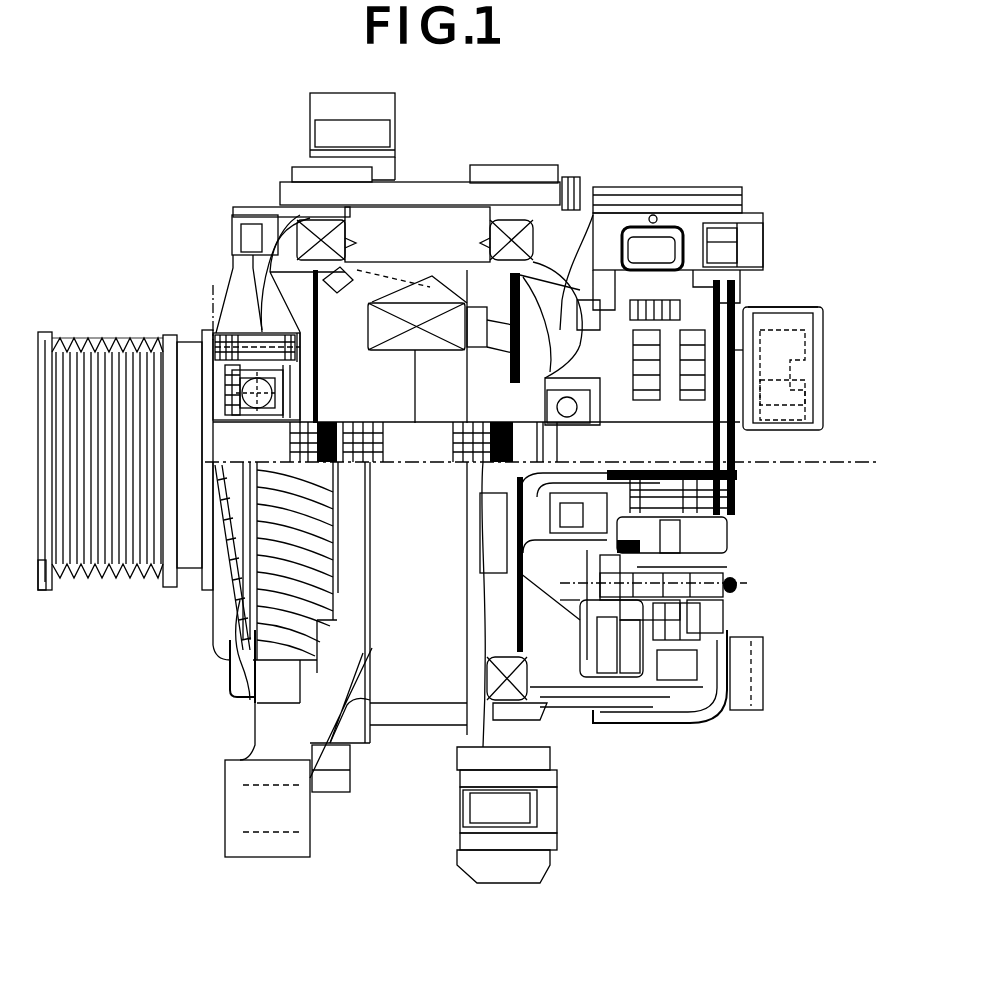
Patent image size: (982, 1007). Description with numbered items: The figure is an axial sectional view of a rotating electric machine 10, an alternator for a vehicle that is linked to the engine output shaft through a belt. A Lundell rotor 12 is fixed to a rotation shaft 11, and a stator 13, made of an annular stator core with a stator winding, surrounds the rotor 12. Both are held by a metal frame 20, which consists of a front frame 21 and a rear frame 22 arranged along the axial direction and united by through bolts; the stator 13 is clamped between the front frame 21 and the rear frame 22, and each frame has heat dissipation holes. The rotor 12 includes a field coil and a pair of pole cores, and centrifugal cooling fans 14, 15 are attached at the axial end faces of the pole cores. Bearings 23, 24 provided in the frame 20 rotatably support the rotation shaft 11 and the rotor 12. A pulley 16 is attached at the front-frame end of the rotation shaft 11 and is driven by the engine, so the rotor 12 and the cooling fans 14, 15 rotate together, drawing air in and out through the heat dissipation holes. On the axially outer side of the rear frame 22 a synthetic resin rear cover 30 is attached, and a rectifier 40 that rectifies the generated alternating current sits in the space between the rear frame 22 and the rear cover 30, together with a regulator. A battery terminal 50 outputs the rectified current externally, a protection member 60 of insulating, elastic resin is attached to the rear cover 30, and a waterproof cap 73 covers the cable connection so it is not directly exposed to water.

The rotating electric machine 10 is at (776, 171).
The rotation shaft 11 is at (218, 355).
The Lundell rotor 12 is at (437, 282).
The stator 13 is at (413, 207).
The centrifugal cooling fan 14 is at (280, 307).
The centrifugal cooling fan 15 is at (558, 300).
The pulley 16 is at (56, 336).
The frame 20 is at (373, 916).
The front frame 21 is at (292, 857).
The rear frame 22 is at (447, 852).
The bearing 23 is at (262, 345).
The bearing 24 is at (577, 297).
The rear cover 30 is at (720, 532).
The rectifier 40 is at (640, 612).
The battery terminal 50 is at (797, 330).
The protection member 60 is at (800, 430).
The waterproof cap 73 is at (779, 304).